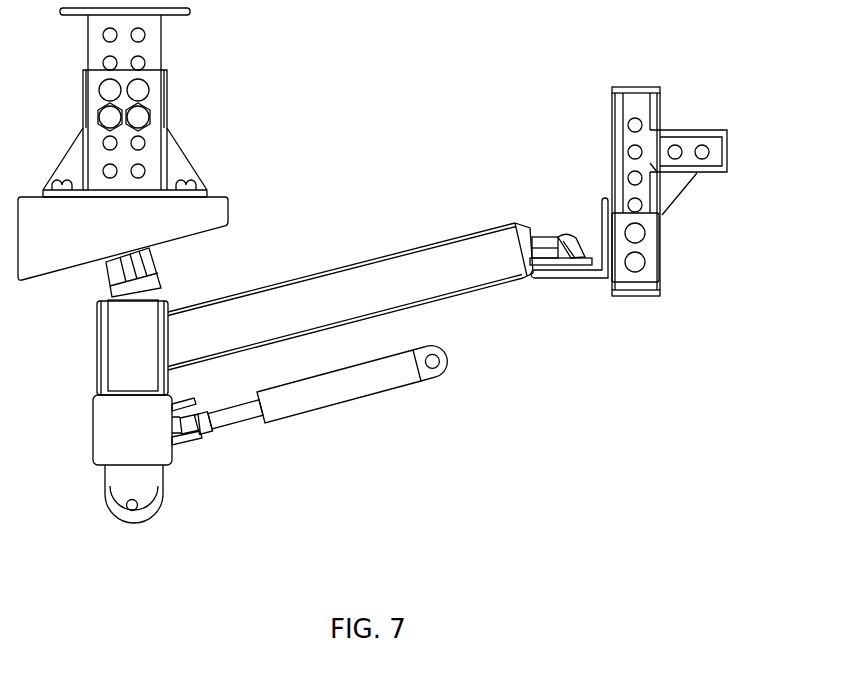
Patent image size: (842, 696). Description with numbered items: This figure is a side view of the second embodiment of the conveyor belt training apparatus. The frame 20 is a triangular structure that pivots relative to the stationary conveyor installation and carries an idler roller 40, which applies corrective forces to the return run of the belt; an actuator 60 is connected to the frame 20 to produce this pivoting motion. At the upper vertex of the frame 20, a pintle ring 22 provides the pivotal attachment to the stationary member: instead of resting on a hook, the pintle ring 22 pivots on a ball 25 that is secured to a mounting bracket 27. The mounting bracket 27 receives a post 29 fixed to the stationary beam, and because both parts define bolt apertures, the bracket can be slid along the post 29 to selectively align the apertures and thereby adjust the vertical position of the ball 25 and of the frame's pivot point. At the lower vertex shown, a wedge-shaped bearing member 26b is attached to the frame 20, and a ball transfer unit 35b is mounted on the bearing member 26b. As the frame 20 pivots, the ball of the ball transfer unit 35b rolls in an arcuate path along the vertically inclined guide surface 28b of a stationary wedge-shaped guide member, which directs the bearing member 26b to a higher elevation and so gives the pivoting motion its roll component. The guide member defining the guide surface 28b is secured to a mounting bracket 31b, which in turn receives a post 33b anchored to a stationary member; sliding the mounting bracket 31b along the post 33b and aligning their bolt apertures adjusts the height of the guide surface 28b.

The frame 20 is at (391, 253).
The pintle ring 22 is at (545, 237).
The ball 25 is at (578, 238).
The bearing member 26b is at (163, 298).
The mounting bracket 27 is at (662, 260).
The guide surface 28b is at (222, 228).
The post 29 is at (613, 120).
The mounting bracket 31b is at (168, 100).
The post 33b is at (162, 35).
The ball transfer unit 35b is at (106, 276).
The idler roller 40 is at (126, 524).
The actuator 60 is at (332, 402).